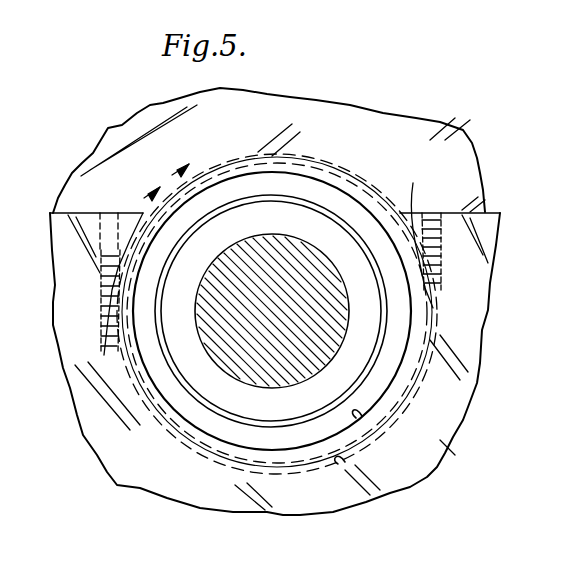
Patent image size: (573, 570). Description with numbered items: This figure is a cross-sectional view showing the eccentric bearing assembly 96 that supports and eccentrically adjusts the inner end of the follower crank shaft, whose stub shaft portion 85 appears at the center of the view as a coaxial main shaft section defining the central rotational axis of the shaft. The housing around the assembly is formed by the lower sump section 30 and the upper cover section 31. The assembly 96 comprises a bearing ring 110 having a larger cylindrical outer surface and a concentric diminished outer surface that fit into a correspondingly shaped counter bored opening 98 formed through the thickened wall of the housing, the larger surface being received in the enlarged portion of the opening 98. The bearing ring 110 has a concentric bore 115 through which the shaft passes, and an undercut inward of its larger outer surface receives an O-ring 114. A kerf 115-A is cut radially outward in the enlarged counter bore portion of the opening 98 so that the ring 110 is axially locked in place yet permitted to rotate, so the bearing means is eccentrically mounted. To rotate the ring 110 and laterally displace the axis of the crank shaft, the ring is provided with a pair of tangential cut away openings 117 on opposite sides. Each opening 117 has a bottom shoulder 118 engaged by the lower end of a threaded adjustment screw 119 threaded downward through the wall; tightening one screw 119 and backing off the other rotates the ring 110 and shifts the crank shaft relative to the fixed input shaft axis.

The lower sump section 30 is at (470, 410).
The upper cover section 31 is at (471, 136).
The stub shaft portion 85 is at (250, 375).
The eccentric bearing assembly 96 is at (349, 171).
The counter bored opening 98 is at (342, 460).
The bearing ring 110 is at (426, 365).
The O-ring 114 is at (261, 152).
The concentric bore 115 is at (360, 414).
The kerf 115-A is at (413, 402).
The tangential cut away opening 117 is at (124, 277).
The bottom shoulder 118 is at (423, 284).
The threaded adjustment screw 119 is at (441, 237).